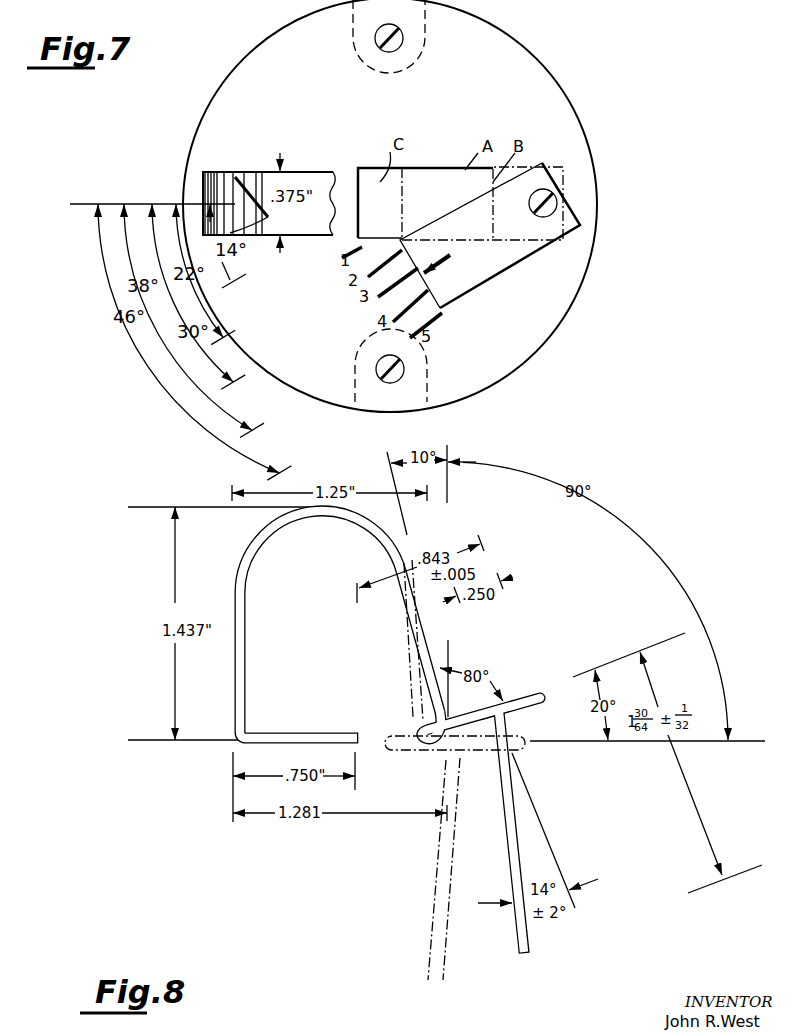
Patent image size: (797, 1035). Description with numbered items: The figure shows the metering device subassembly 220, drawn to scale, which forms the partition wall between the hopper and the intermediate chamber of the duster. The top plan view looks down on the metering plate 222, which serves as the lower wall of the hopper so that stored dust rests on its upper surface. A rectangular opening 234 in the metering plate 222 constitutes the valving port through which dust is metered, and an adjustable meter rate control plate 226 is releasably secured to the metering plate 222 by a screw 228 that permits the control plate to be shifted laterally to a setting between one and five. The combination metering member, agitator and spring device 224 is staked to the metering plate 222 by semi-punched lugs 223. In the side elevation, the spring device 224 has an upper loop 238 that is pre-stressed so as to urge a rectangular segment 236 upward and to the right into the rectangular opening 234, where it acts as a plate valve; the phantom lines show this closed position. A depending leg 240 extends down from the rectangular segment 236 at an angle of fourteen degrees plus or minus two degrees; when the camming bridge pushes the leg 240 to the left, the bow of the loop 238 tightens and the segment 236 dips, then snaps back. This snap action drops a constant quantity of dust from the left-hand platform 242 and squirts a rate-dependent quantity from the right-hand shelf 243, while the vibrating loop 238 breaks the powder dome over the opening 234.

In FIG. 7, the metering device subassembly 220 is at (574, 103).
In FIG. 7, the metering plate 222 is at (534, 333).
In FIG. 7, the semi-punched lugs 223 is at (271, 216).
In FIG. 7, the combination metering member, agitator and spring device 224 is at (320, 192).
In FIG. 8, the combination metering member, agitator and spring device 224 is at (250, 573).
In FIG. 7, the adjustable meter rate control plate 226 is at (524, 258).
In FIG. 7, the screw 228 is at (552, 215).
In FIG. 7, the rectangular opening 234 is at (432, 172).
In FIG. 8, the rectangular segment 236 is at (527, 694).
In FIG. 8, the upper loop 238 is at (330, 512).
In FIG. 8, the depending leg 240 is at (515, 922).
In FIG. 8, the left-hand platform 242 is at (420, 726).
In FIG. 7, the right-hand shelf 243 is at (445, 198).
In FIG. 8, the right-hand shelf 243 is at (507, 694).